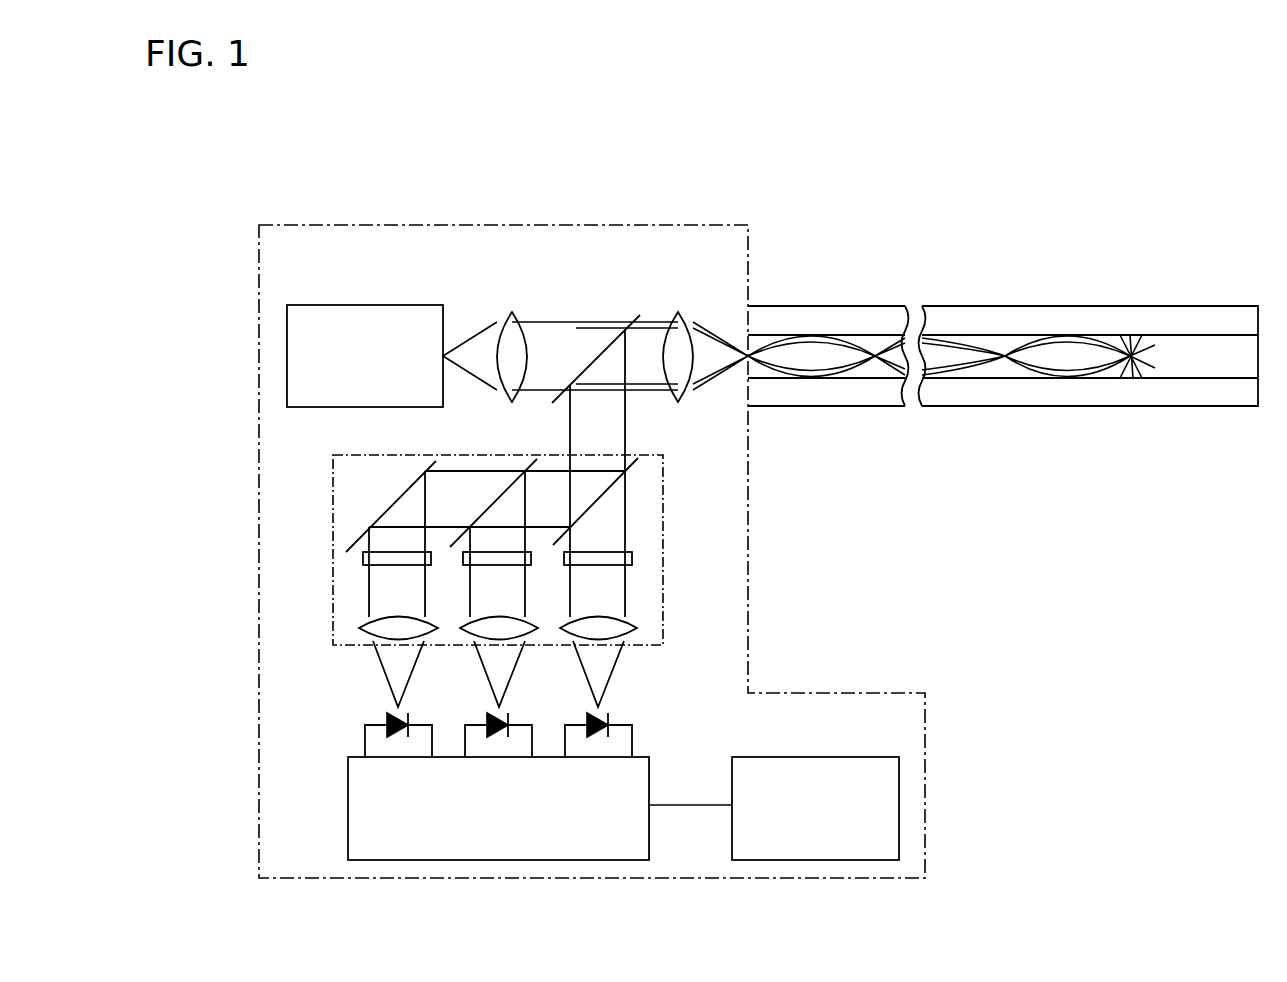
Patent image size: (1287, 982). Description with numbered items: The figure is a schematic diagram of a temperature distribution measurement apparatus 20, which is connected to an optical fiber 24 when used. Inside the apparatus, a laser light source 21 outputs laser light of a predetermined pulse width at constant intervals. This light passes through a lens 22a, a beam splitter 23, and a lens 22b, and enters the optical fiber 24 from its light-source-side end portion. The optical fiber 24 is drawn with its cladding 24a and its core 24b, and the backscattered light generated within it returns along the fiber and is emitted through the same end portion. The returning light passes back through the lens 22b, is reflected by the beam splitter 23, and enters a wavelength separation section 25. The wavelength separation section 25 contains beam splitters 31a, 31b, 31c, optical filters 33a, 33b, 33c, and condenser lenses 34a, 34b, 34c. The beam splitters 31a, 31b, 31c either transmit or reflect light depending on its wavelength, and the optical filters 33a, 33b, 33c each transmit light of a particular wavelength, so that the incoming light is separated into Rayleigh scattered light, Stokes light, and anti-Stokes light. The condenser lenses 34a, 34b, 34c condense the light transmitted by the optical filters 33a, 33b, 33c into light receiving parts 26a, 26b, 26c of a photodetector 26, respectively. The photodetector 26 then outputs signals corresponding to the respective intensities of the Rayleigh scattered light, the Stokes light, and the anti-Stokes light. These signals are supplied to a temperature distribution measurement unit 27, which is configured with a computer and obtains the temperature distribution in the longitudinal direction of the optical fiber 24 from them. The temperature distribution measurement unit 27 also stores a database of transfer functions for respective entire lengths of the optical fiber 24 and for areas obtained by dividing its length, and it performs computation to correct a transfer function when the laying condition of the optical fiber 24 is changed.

The temperature distribution measurement apparatus 20 is at (356, 224).
The laser light source 21 is at (366, 305).
The lens 22a is at (518, 314).
The lens 22b is at (688, 318).
The beam splitter 23 is at (601, 331).
The optical fiber 24 is at (822, 306).
The cladding 24a is at (1043, 306).
The core 24b is at (1210, 335).
The wavelength separation section 25 is at (663, 522).
The photodetector 26 is at (348, 803).
The light receiving part 26a is at (613, 703).
The light receiving part 26b is at (482, 718).
The light receiving part 26c is at (377, 712).
The temperature distribution measurement unit 27 is at (873, 757).
The beam splitter 31a is at (640, 458).
The beam splitter 31b is at (528, 466).
The beam splitter 31c is at (400, 497).
The optical filter 33a is at (632, 558).
The optical filter 33b is at (531, 558).
The optical filter 33c is at (365, 556).
The condenser lens 34a is at (625, 642).
The condenser lens 34b is at (535, 643).
The condenser lens 34c is at (362, 645).